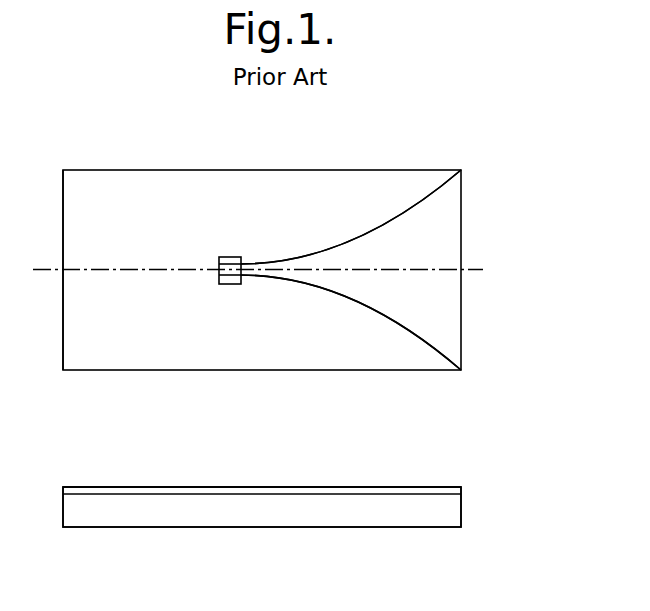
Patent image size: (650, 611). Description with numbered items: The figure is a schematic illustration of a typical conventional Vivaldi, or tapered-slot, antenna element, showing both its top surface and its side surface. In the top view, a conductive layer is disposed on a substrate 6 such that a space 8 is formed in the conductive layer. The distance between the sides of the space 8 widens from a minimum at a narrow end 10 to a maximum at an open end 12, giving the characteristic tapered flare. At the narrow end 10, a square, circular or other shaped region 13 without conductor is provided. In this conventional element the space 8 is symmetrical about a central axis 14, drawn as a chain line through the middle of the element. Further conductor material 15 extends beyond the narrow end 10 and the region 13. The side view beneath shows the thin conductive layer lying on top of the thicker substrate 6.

The substrate 6 is at (231, 510).
The space 8 is at (441, 206).
The narrow end 10 is at (246, 260).
The open end 12 is at (446, 339).
The region without conductor 13 is at (220, 259).
The central axis 14 is at (466, 271).
The further conductor material 15 is at (96, 188).